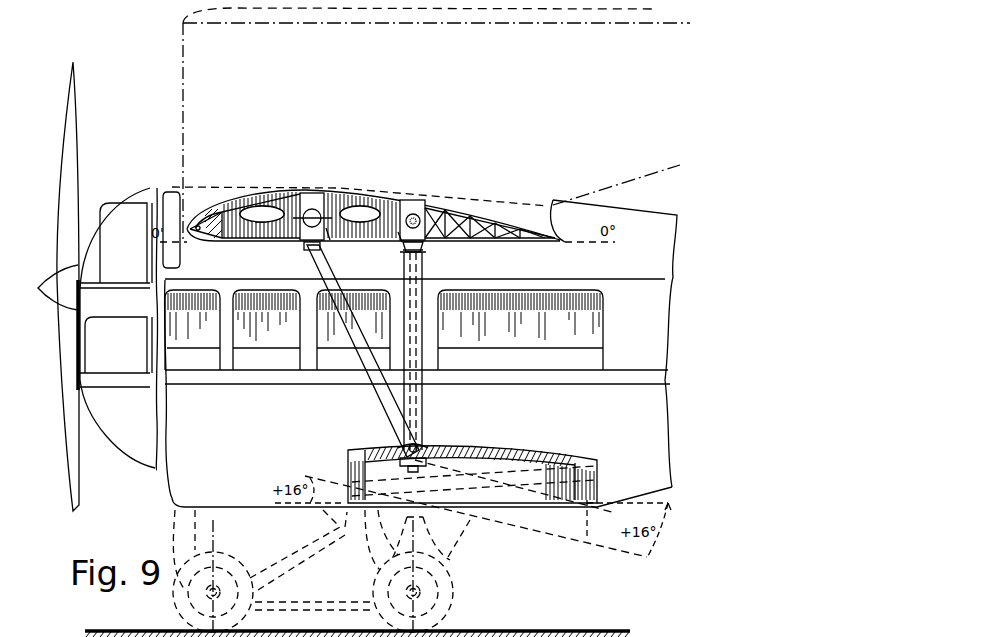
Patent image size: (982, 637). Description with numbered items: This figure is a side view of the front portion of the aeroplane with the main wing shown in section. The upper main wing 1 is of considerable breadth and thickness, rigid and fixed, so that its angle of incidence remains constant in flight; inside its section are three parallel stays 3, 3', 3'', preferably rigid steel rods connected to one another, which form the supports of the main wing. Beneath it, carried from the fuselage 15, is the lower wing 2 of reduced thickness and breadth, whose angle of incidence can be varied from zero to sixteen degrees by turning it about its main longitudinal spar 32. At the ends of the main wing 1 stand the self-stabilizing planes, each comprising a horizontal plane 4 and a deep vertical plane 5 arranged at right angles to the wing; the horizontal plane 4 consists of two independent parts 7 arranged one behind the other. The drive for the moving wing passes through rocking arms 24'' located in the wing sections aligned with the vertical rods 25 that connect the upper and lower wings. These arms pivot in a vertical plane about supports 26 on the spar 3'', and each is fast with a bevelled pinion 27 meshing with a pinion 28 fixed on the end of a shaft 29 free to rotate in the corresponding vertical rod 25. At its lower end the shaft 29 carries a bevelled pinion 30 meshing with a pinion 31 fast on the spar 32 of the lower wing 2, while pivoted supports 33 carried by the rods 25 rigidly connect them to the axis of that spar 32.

The main wing 1 is at (373, 196).
The lower wing 2 is at (472, 459).
The stay 3 is at (206, 215).
The stay 3' is at (312, 200).
The stay 3'' is at (427, 212).
The horizontal plane 4 is at (607, 19).
The vertical plane 5 is at (195, 104).
The independent part 7 is at (272, 12).
The fuselage 15 is at (185, 481).
The rocking arm 24'' is at (360, 182).
The vertical rod 25 is at (351, 338).
The support 26 is at (330, 229).
The bevelled pinion 27 is at (411, 210).
The pinion 28 is at (428, 241).
The shaft 29 is at (420, 272).
The bevelled pinion 30 is at (425, 445).
The pinion 31 is at (400, 461).
The main longitudinal spar 32 is at (473, 483).
The pivoted support 33 is at (424, 459).